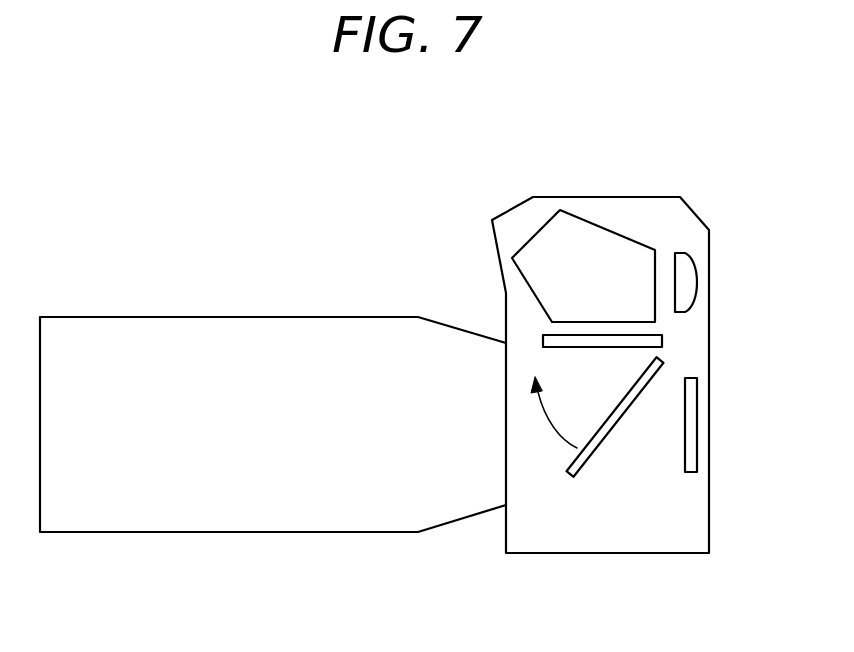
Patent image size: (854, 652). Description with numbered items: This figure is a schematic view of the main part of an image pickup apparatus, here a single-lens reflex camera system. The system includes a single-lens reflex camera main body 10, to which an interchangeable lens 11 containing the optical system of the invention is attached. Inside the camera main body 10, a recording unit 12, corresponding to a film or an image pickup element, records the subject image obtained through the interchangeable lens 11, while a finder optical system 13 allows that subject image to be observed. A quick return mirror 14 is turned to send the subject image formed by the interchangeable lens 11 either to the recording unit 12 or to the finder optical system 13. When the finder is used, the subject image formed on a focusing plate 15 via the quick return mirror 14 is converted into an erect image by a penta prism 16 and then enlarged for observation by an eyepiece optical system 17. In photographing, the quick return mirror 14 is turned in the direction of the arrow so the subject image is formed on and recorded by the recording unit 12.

The single-lens reflex camera main body 10 is at (680, 535).
The interchangeable lens 11 is at (272, 515).
The recording unit 12 is at (690, 455).
The finder optical system 13 is at (737, 139).
The quick return mirror 14 is at (580, 460).
The focusing plate 15 is at (566, 337).
The penta prism 16 is at (608, 250).
The eyepiece optical system 17 is at (685, 263).